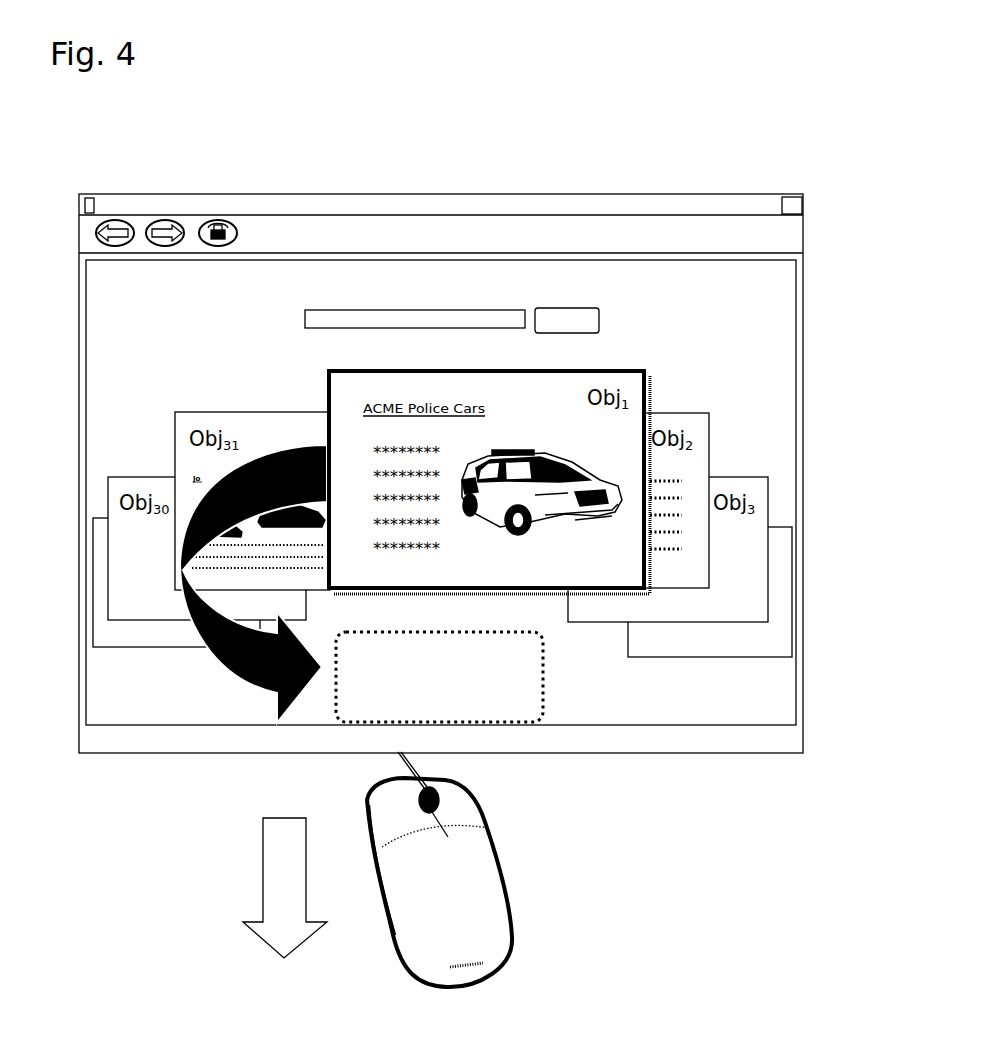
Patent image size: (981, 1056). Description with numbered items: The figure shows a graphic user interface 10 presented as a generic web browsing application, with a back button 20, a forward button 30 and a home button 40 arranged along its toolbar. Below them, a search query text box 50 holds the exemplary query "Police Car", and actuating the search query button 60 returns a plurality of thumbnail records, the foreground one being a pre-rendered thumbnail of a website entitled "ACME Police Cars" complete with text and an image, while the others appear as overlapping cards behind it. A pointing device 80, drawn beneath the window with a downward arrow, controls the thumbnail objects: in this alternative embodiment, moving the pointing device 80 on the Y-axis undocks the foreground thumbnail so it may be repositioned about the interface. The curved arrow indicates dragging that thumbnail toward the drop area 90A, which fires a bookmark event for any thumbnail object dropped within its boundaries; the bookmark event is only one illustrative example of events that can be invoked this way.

The graphic user interface 10 is at (495, 193).
The back button 20 is at (118, 248).
The forward button 30 is at (157, 247).
The home button 40 is at (238, 230).
The search query text box 50 is at (320, 305).
The search query button 60 is at (595, 308).
The pointing device 80 is at (510, 928).
The drop area 90A is at (543, 665).